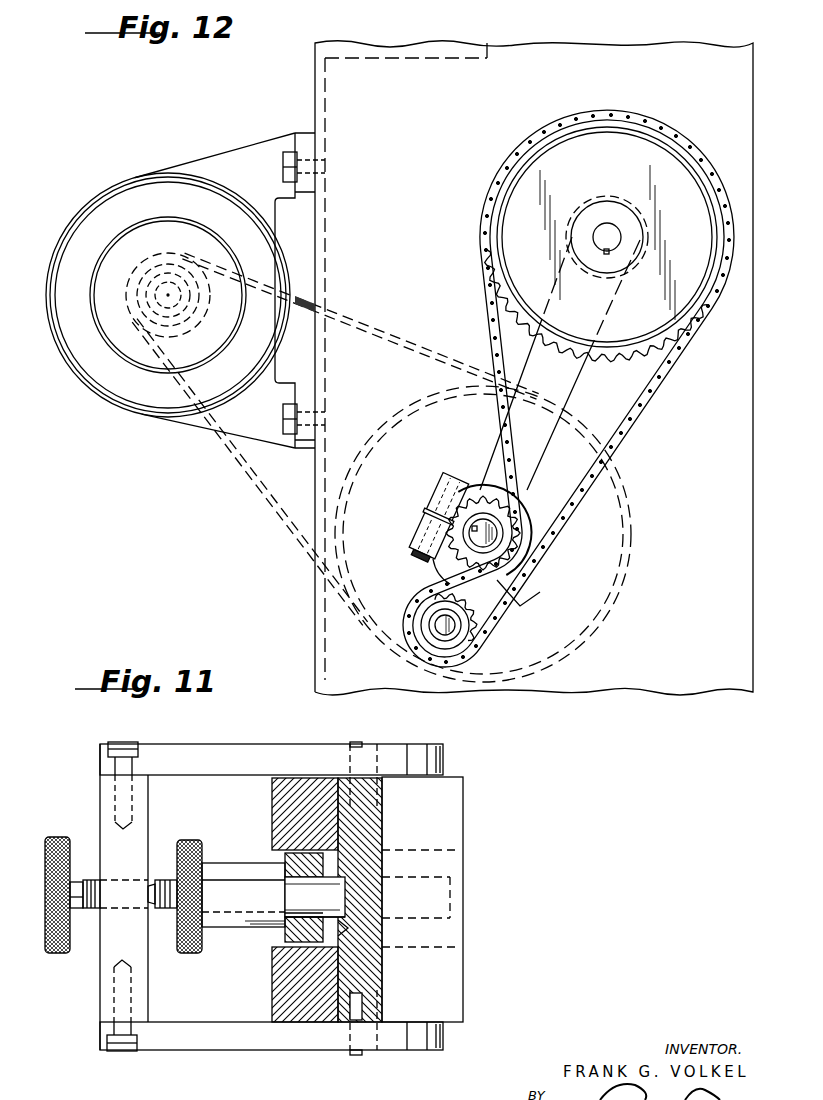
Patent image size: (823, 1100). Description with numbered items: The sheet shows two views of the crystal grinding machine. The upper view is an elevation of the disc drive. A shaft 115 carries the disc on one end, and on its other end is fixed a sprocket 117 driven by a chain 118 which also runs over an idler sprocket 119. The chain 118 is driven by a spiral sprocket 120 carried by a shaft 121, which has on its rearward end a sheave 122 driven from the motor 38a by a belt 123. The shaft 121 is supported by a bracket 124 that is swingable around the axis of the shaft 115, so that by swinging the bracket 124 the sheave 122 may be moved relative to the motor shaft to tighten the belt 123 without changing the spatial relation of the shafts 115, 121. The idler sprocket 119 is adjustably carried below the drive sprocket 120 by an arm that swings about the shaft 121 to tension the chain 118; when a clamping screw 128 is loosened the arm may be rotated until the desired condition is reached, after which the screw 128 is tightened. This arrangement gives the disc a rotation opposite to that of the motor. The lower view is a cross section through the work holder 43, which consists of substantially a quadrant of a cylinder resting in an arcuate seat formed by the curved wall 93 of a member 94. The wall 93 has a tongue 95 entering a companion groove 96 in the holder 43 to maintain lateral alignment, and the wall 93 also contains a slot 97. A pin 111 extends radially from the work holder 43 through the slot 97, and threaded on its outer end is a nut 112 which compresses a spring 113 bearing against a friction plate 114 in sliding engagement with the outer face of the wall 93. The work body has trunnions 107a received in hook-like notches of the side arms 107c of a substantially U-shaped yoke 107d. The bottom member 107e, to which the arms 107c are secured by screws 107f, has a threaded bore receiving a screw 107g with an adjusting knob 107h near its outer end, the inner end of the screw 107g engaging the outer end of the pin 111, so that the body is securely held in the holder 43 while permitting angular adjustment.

In FIG. 12, the motor 38a is at (111, 403).
In FIG. 12, the shaft 115 is at (617, 228).
In FIG. 12, the sprocket 117 is at (545, 168).
In FIG. 12, the chain 118 is at (651, 390).
In FIG. 12, the idler sprocket 119 is at (473, 625).
In FIG. 12, the spiral sprocket 120 is at (494, 497).
In FIG. 12, the shaft 121 is at (496, 538).
In FIG. 12, the sheave 122 is at (592, 628).
In FIG. 12, the belt 123 is at (291, 528).
In FIG. 12, the bracket 124 is at (563, 387).
In FIG. 12, the clamping screw 128 is at (418, 556).
In FIG. 11, the work holder 43 is at (365, 783).
In FIG. 11, the curved wall 93 is at (333, 858).
In FIG. 11, the member 94 is at (266, 1002).
In FIG. 11, the tongue 95 is at (342, 868).
In FIG. 11, the groove 96 is at (340, 928).
In FIG. 11, the slot 97 is at (313, 850).
In FIG. 11, the trunnions 107a is at (417, 1047).
In FIG. 11, the side arms 107c is at (236, 753).
In FIG. 11, the yoke 107d is at (188, 1047).
In FIG. 11, the bottom member 107e is at (107, 789).
In FIG. 11, the screws 107f is at (141, 726).
In FIG. 11, the screw 107g is at (78, 878).
In FIG. 11, the adjusting knob 107h is at (58, 952).
In FIG. 11, the pin 111 is at (283, 935).
In FIG. 11, the nut 112 is at (188, 953).
In FIG. 11, the spring 113 is at (246, 866).
In FIG. 11, the friction plate 114 is at (283, 962).